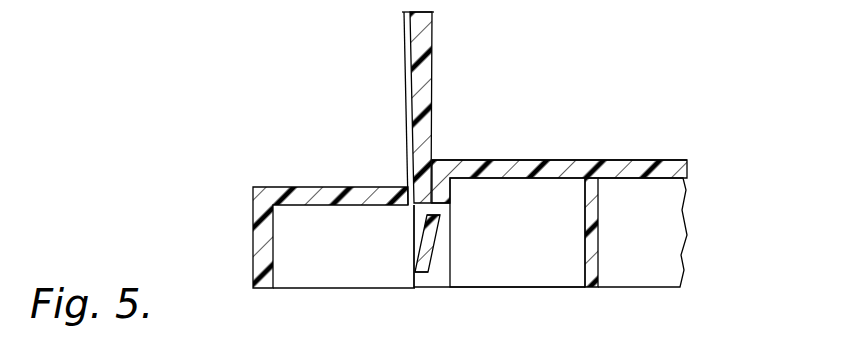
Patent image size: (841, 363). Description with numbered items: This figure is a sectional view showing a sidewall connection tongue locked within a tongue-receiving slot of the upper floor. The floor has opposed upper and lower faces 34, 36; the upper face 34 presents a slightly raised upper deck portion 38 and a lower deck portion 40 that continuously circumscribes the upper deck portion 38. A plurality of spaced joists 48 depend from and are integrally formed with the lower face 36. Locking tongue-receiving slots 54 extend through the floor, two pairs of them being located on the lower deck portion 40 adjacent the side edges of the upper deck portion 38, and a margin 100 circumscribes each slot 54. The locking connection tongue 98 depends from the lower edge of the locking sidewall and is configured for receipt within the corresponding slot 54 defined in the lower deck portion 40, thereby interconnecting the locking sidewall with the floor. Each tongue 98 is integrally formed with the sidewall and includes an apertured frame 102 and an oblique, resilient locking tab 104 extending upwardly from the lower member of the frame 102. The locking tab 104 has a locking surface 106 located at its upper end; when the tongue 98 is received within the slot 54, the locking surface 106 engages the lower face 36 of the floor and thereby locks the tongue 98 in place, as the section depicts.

The upper face 34 is at (665, 160).
The lower face 36 is at (556, 180).
The upper deck portion 38 is at (533, 160).
The lower deck portion 40 is at (300, 187).
The joists 48 is at (672, 223).
The locking tongue-receiving slot 54 is at (402, 187).
The locking connection tongue 98 is at (415, 270).
The margin 100 is at (437, 206).
The apertured frame 102 is at (418, 223).
The locking tab 104 is at (428, 255).
The locking surface 106 is at (440, 215).